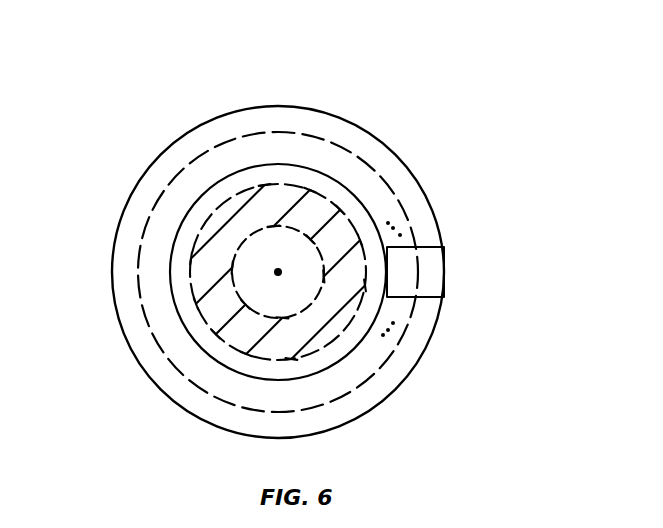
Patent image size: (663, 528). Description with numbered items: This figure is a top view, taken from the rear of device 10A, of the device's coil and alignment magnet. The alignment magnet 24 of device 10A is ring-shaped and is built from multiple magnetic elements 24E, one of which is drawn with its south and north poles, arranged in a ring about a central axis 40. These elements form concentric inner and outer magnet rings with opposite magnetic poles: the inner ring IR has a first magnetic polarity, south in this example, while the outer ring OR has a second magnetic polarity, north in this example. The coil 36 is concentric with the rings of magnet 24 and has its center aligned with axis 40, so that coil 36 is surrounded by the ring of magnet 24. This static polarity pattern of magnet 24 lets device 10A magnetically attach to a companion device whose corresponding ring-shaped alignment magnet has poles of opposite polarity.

The device 10A is at (484, 80).
The alignment magnet 24 is at (112, 268).
The magnetic elements 24E is at (441, 246).
The coil 36 is at (242, 245).
The axis 40 is at (278, 276).
The inner ring IR is at (280, 133).
The outer ring OR is at (370, 140).